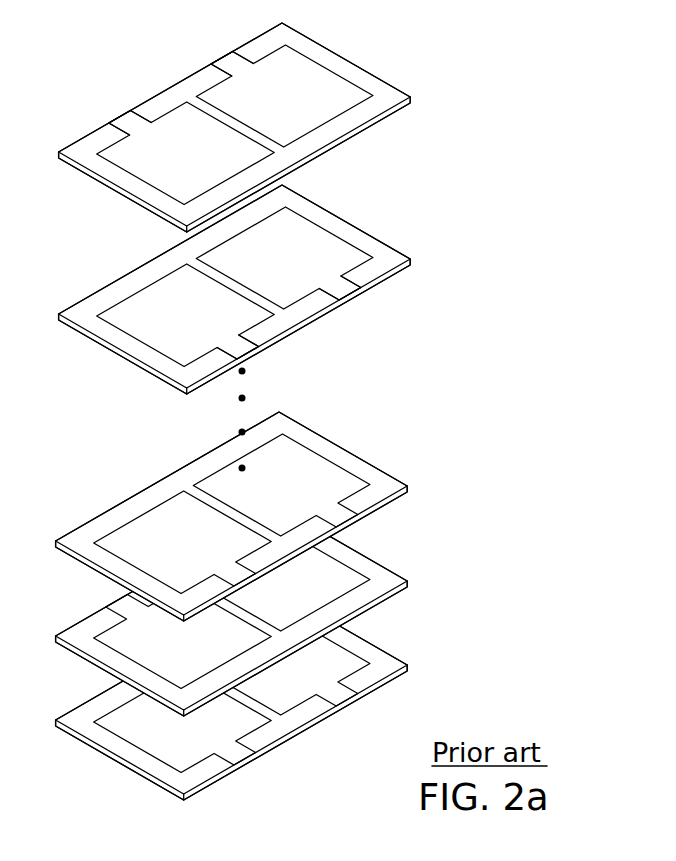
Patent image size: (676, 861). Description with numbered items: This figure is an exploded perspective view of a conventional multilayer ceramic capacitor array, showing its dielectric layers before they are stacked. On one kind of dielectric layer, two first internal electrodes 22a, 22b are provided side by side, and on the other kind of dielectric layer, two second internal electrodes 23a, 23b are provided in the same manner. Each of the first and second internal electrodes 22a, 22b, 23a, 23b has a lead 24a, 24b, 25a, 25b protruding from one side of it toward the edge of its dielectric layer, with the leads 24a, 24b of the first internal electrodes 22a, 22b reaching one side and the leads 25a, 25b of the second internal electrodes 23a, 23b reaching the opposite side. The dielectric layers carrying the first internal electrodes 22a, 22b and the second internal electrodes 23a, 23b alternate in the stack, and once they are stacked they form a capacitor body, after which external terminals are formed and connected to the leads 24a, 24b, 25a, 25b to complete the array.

The first internal electrode 22a is at (137, 167).
The first internal electrode 22b is at (325, 80).
The second internal electrode 23a is at (143, 333).
The second internal electrode 23b is at (338, 243).
The lead 24a is at (128, 125).
The lead 24b is at (229, 72).
The lead 25a is at (227, 344).
The lead 25b is at (345, 288).